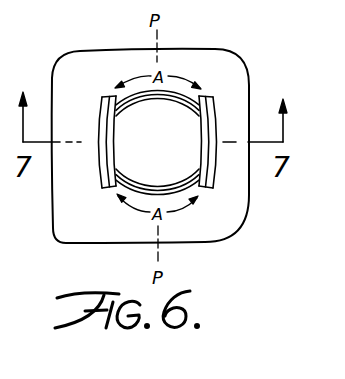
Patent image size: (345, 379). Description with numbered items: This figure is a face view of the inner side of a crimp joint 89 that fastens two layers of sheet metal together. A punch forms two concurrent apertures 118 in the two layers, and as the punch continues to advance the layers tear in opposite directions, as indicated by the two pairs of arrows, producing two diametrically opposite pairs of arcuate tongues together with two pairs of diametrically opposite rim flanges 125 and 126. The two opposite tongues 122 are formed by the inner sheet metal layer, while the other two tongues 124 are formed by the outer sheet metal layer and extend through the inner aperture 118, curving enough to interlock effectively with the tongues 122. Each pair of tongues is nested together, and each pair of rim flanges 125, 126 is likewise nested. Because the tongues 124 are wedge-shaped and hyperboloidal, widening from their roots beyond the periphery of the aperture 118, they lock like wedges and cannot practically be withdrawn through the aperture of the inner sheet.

The crimp joint 89 is at (224, 92).
The aperture 118 is at (157, 142).
The tongue 122 is at (106, 121).
The tongue 124 is at (109, 189).
The rim flange 125 is at (140, 182).
The rim flange 126 is at (131, 92).